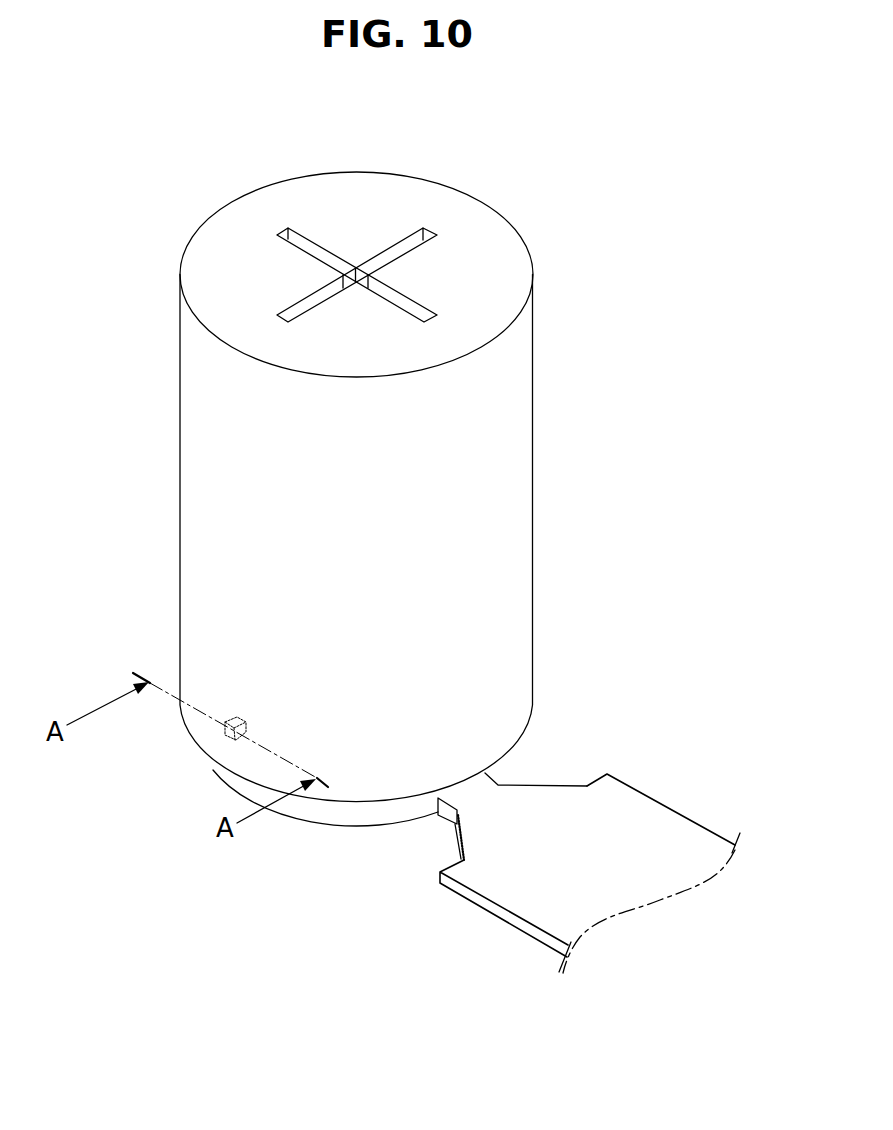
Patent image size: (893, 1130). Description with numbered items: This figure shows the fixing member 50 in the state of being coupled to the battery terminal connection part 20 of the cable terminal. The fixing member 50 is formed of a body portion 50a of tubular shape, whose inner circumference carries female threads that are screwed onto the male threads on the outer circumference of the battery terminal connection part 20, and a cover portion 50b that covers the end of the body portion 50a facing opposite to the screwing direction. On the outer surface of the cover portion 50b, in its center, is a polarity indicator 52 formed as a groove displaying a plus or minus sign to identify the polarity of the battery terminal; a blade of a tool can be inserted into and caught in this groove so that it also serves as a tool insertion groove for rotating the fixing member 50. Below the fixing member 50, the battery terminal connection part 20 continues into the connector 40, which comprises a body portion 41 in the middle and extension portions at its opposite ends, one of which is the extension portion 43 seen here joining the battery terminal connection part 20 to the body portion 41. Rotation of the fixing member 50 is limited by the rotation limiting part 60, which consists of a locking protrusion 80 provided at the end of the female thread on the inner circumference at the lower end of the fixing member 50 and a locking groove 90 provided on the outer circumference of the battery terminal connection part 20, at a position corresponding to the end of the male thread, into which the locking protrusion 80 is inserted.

The battery terminal connection part 20 is at (332, 818).
The connector 40 is at (596, 832).
The body portion 41 is at (675, 828).
The extension portion 43 is at (495, 781).
The fixing member 50 is at (416, 457).
The body portion 50a is at (517, 542).
The cover portion 50b is at (385, 245).
The polarity indicator 52 is at (401, 244).
The rotation limiting part 60 is at (185, 792).
The locking protrusion 80 is at (235, 728).
The locking groove 90 is at (233, 732).